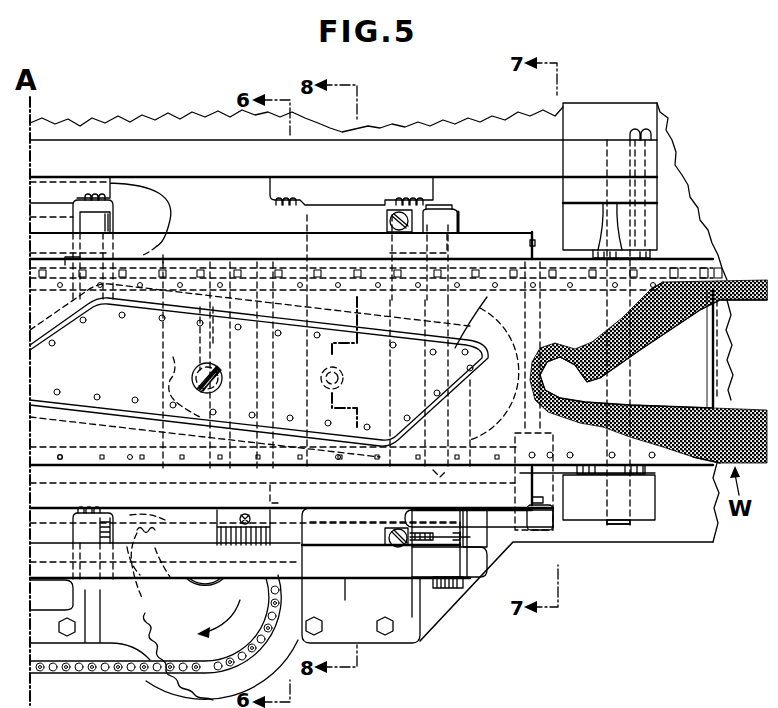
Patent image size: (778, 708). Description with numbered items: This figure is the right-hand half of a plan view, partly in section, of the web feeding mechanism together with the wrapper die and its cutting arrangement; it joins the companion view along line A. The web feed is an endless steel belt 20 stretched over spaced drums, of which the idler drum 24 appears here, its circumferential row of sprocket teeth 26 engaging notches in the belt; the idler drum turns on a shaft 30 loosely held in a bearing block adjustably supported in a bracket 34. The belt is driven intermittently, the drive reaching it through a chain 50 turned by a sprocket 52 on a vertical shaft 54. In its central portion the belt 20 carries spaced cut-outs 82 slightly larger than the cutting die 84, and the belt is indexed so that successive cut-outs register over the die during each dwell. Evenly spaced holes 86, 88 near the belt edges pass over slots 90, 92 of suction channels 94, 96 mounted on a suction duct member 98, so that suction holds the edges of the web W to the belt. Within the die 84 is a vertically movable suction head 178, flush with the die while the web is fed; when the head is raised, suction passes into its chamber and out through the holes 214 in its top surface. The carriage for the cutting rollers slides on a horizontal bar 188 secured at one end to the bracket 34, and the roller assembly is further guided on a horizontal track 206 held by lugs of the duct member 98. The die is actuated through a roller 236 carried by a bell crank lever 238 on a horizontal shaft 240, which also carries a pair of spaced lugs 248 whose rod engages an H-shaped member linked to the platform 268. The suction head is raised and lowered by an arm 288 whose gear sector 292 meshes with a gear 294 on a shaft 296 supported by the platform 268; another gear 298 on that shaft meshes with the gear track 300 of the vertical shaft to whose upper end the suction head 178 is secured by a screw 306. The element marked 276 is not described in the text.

The endless steel belt 20 is at (697, 375).
The idler drum 24 is at (693, 469).
The sprocket teeth 26 is at (667, 283).
The shaft 30 is at (622, 521).
The bracket 34 is at (647, 226).
The chain 50 is at (115, 675).
The sprocket 52 is at (145, 632).
The vertical shaft 54 is at (197, 602).
The cut-outs 82 is at (520, 332).
The cutting die 84 is at (259, 370).
The holes 86 is at (60, 460).
The holes 88 is at (60, 282).
The slot 90 is at (130, 460).
The slot 92 is at (292, 285).
The suction channel 94 is at (566, 591).
The suction channel 96 is at (513, 240).
The suction duct member 98 is at (355, 602).
The suction head 178 is at (182, 327).
The horizontal bar 188 is at (247, 174).
The horizontal track 206 is at (373, 572).
The holes 214 is at (122, 318).
The roller 236 is at (553, 524).
The bell crank lever 238 is at (498, 512).
The horizontal shaft 240 is at (428, 209).
The lugs 248 is at (458, 220).
The platform 268 is at (433, 477).
The pin 276 is at (548, 512).
The arm 288 is at (86, 645).
The gear sector 292 is at (235, 613).
The gear 294 is at (148, 536).
The shaft 296 is at (300, 542).
The gear 298 is at (192, 381).
The gear track 300 is at (342, 356).
The screw 306 is at (194, 372).